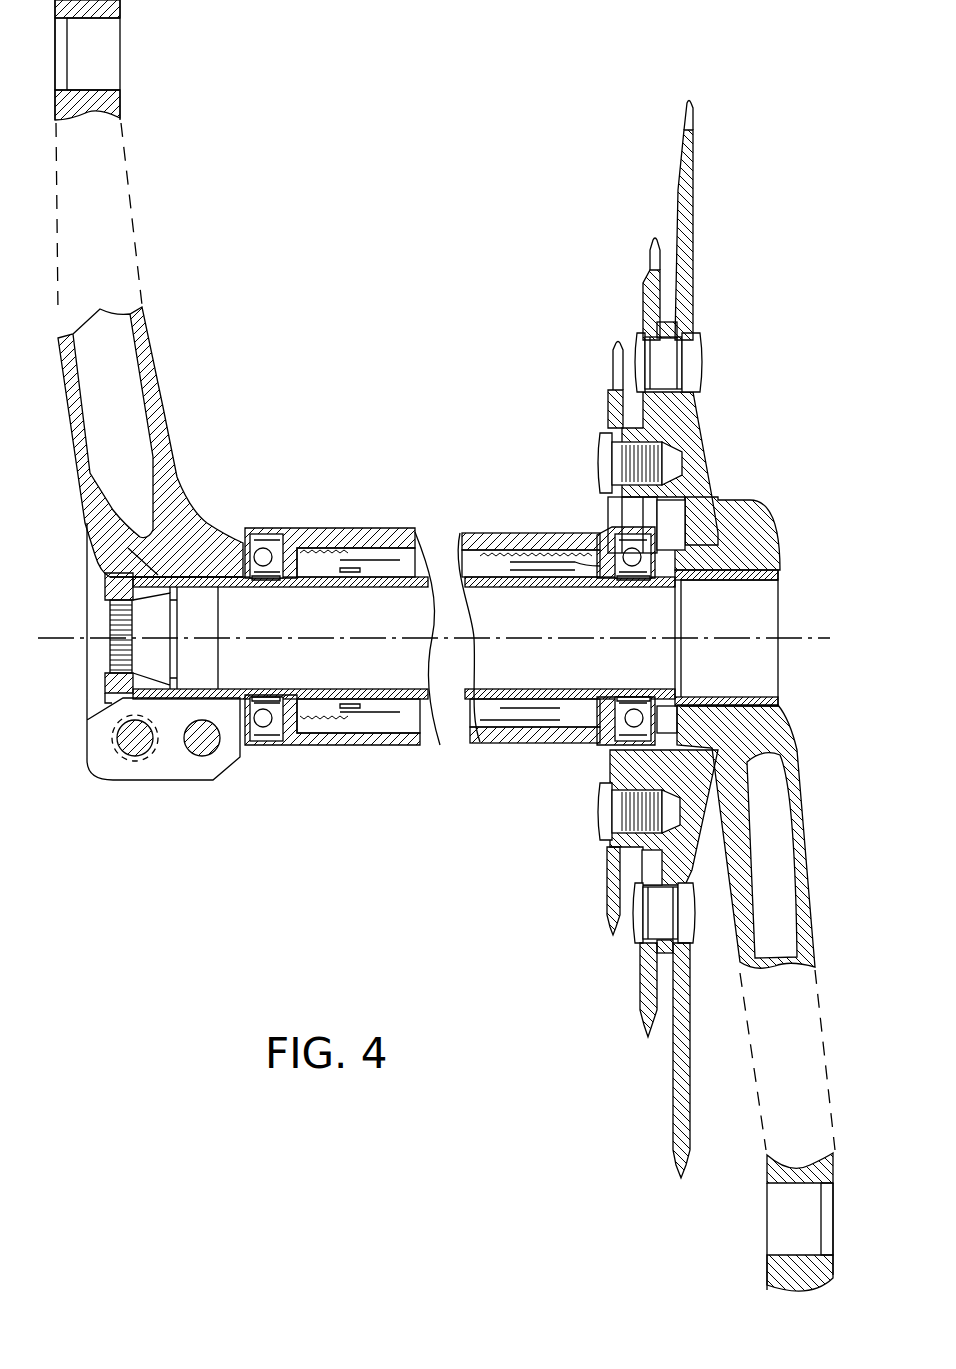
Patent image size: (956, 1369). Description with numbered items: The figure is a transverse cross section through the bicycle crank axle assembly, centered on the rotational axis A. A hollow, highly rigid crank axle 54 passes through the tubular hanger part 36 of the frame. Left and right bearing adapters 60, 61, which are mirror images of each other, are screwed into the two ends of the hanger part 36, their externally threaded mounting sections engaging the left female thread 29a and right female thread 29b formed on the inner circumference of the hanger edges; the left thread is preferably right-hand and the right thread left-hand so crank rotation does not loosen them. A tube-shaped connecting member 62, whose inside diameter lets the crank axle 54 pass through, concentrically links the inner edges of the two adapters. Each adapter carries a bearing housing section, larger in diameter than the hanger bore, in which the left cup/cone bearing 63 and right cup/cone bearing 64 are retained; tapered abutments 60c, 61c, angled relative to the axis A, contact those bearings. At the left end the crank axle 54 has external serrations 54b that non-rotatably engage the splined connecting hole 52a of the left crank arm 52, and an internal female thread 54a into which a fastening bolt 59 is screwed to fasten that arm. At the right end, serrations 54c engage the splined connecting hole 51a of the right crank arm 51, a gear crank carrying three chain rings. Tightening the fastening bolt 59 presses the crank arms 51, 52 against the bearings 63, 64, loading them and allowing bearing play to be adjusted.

The rotational axis A is at (807, 638).
The left female thread 29a is at (325, 556).
The right female thread 29b is at (573, 562).
The tubular hanger part 36 is at (370, 531).
The right crank arm 51 is at (792, 778).
The splined connecting hole 51a is at (722, 580).
The left crank arm 52 is at (168, 398).
The splined connecting hole 52a is at (210, 578).
The crank axle 54 is at (490, 587).
The female thread 54a is at (180, 682).
The serrations 54b is at (147, 545).
The serrations 54c is at (770, 718).
The fastening bolt 59 is at (105, 692).
The left bearing adapter 60 is at (262, 524).
The tapered abutment 60c is at (262, 741).
The right bearing adapter 61 is at (604, 530).
The tapered abutment 61c is at (641, 703).
The tube-shaped connecting member 62 is at (474, 568).
The left cup/cone bearing 63 is at (258, 582).
The right cup/cone bearing 64 is at (641, 583).